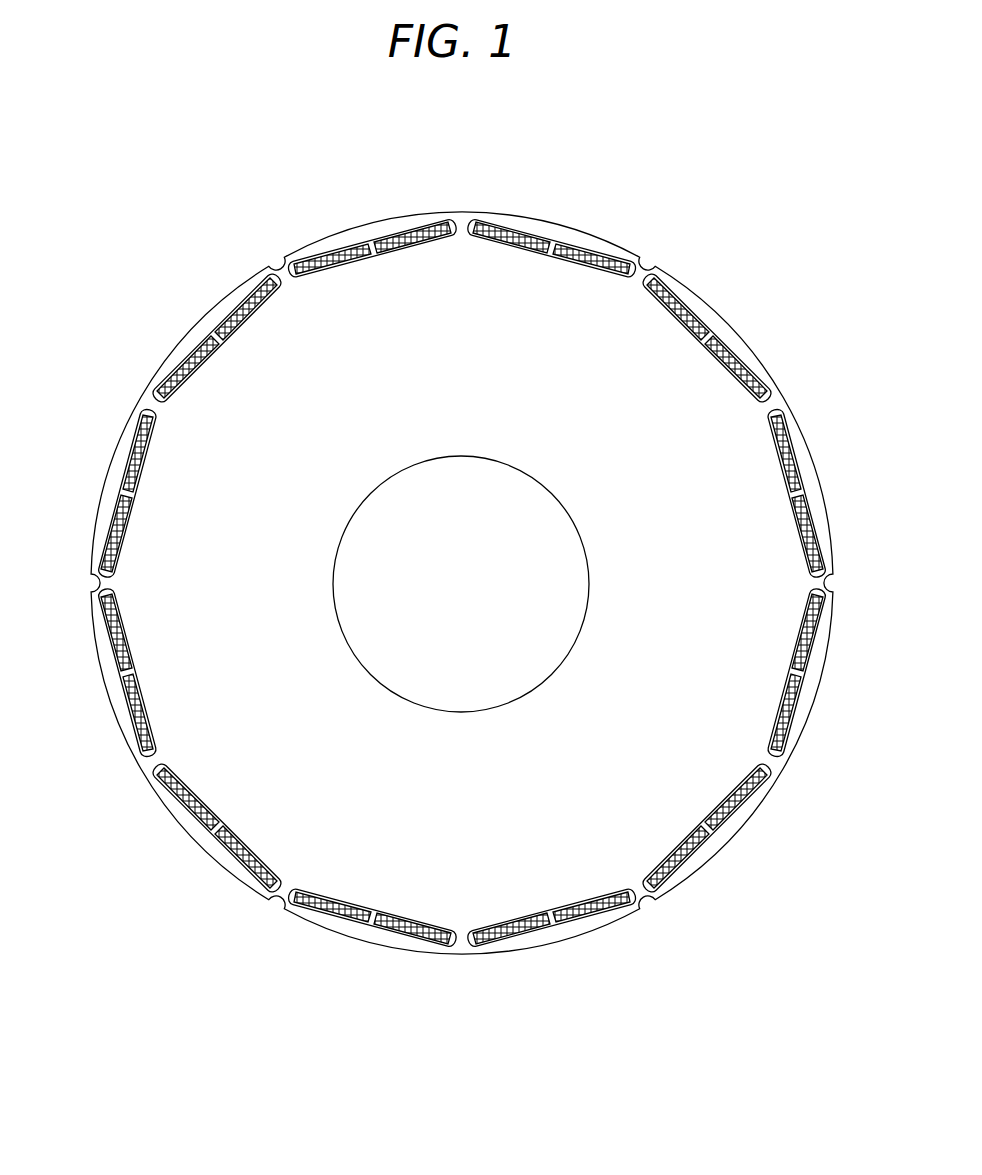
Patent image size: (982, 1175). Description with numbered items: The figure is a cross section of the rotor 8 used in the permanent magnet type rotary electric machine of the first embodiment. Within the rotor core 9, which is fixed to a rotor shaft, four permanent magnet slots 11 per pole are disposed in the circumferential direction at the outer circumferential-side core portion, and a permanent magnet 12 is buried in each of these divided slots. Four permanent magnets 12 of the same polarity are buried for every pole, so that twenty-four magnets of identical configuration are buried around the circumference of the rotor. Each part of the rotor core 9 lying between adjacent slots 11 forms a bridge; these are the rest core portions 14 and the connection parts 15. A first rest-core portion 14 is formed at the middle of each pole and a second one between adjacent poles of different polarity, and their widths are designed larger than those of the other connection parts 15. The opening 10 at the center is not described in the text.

The rotor 8 is at (463, 554).
The rotor core 9 is at (463, 540).
The shaft hole 10 is at (530, 655).
The permanent magnet slot 11 is at (438, 583).
The permanent magnet 12 is at (228, 861).
The rest core portion 14 is at (286, 276).
The connection part 15 is at (554, 246).